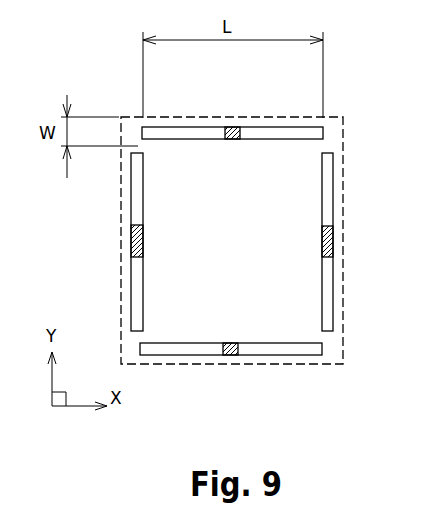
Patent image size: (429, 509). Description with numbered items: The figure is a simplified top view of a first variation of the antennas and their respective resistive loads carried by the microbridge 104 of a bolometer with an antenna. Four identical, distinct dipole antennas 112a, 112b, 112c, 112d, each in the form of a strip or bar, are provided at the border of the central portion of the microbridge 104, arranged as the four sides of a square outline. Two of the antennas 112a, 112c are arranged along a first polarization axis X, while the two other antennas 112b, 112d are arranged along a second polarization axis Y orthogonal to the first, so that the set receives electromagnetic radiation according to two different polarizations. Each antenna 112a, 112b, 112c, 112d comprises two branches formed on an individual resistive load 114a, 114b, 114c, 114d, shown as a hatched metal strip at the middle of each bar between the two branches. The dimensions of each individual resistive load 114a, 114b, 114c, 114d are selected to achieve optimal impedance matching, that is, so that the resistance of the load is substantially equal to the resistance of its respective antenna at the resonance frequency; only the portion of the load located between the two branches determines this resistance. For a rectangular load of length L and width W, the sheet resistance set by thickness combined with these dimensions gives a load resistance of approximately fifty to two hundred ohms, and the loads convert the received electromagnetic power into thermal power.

The microbridge 104 is at (327, 364).
The dipole antenna 112a is at (187, 138).
The dipole antenna 112b is at (330, 200).
The dipole antenna 112c is at (173, 346).
The dipole antenna 112d is at (135, 200).
The individual resistive load 114a is at (230, 138).
The individual resistive load 114b is at (330, 240).
The individual resistive load 114c is at (228, 346).
The individual resistive load 114d is at (137, 242).